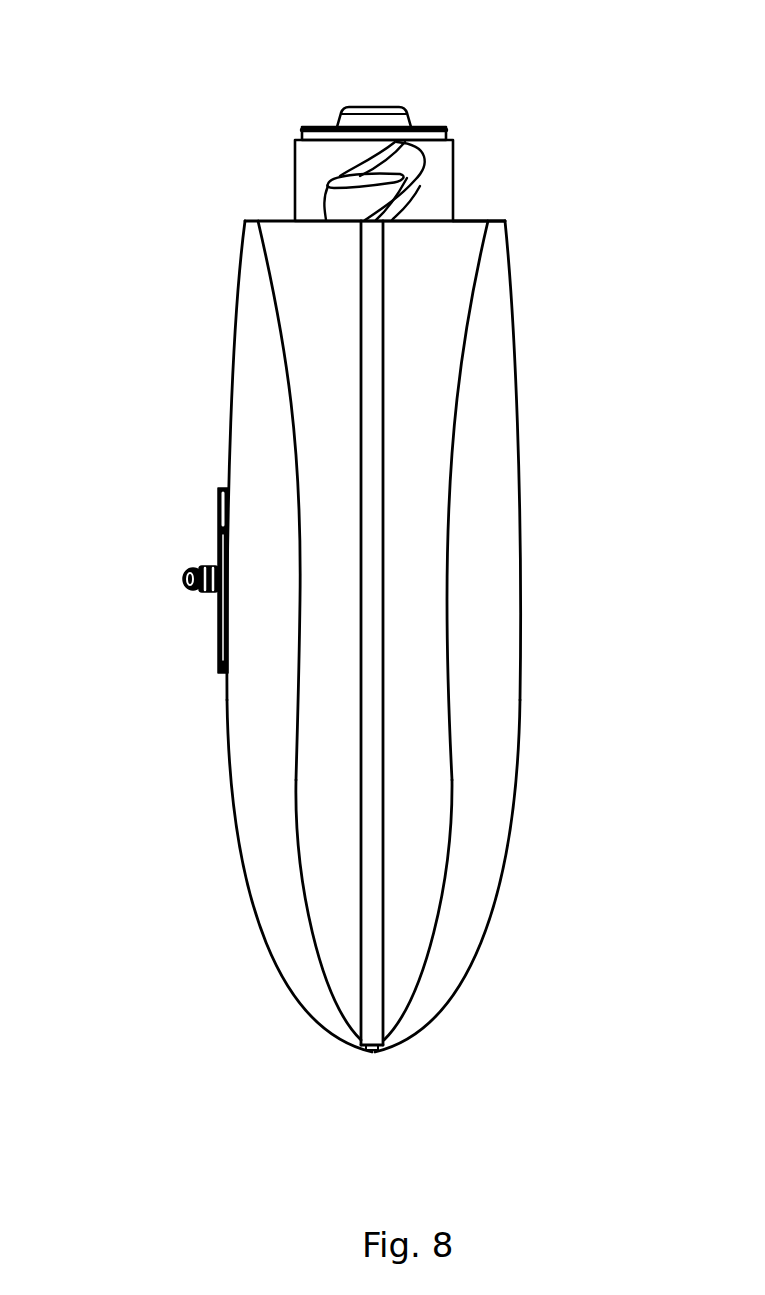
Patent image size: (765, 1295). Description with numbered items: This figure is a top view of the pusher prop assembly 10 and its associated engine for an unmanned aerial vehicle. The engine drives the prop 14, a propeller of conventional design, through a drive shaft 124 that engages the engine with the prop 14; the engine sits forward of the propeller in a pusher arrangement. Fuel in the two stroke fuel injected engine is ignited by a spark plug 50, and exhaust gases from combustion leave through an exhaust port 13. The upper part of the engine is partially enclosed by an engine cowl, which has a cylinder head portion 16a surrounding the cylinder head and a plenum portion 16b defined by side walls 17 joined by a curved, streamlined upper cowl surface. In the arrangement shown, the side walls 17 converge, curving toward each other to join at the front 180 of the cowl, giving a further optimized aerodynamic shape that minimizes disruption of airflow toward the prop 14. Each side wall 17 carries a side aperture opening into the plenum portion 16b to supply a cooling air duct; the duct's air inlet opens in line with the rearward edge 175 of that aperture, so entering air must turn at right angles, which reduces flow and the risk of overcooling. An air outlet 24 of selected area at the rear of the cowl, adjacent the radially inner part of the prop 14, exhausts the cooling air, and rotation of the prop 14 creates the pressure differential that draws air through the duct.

The pusher prop assembly 10 is at (293, 140).
The drive shaft 124 is at (373, 106).
The prop 14 is at (347, 203).
The rearward edge 175 is at (243, 221).
The air outlet 24 is at (470, 220).
The cylinder head portion 16a is at (517, 473).
The plenum portion 16b is at (470, 972).
The side walls 17 is at (370, 690).
The front 180 is at (370, 1051).
The exhaust port 13 is at (218, 520).
The spark plug 50 is at (184, 578).